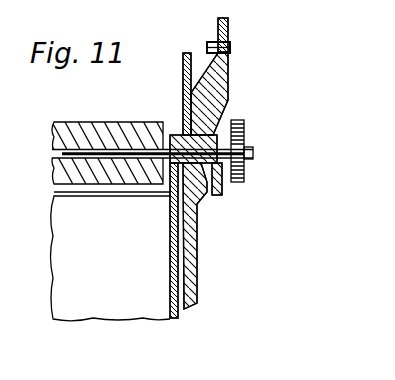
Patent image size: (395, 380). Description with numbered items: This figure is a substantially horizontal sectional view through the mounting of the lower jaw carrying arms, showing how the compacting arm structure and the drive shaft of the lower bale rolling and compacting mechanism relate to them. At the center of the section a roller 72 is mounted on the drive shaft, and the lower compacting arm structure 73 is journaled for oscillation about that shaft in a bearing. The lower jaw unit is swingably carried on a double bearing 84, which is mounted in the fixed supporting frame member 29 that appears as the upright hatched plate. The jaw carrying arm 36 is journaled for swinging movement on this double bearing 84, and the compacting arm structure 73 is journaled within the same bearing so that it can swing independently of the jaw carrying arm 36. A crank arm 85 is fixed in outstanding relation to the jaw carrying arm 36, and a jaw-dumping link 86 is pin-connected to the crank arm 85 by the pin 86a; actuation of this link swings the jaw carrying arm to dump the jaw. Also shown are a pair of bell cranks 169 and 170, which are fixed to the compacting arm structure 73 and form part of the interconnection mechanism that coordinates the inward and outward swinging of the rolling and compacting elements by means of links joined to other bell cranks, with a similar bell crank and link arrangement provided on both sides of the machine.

The fixed supporting frame member 29 is at (183, 80).
The jaw carrying arm 36 is at (197, 252).
The roller 72 is at (95, 130).
The compacting arm structure 73 is at (170, 258).
The double bearing 84 is at (175, 135).
The crank arm 85 is at (219, 92).
The jaw-dumping link 86 is at (229, 25).
The pin 86a is at (231, 48).
The bell crank 169 is at (217, 111).
The bell crank 170 is at (222, 188).